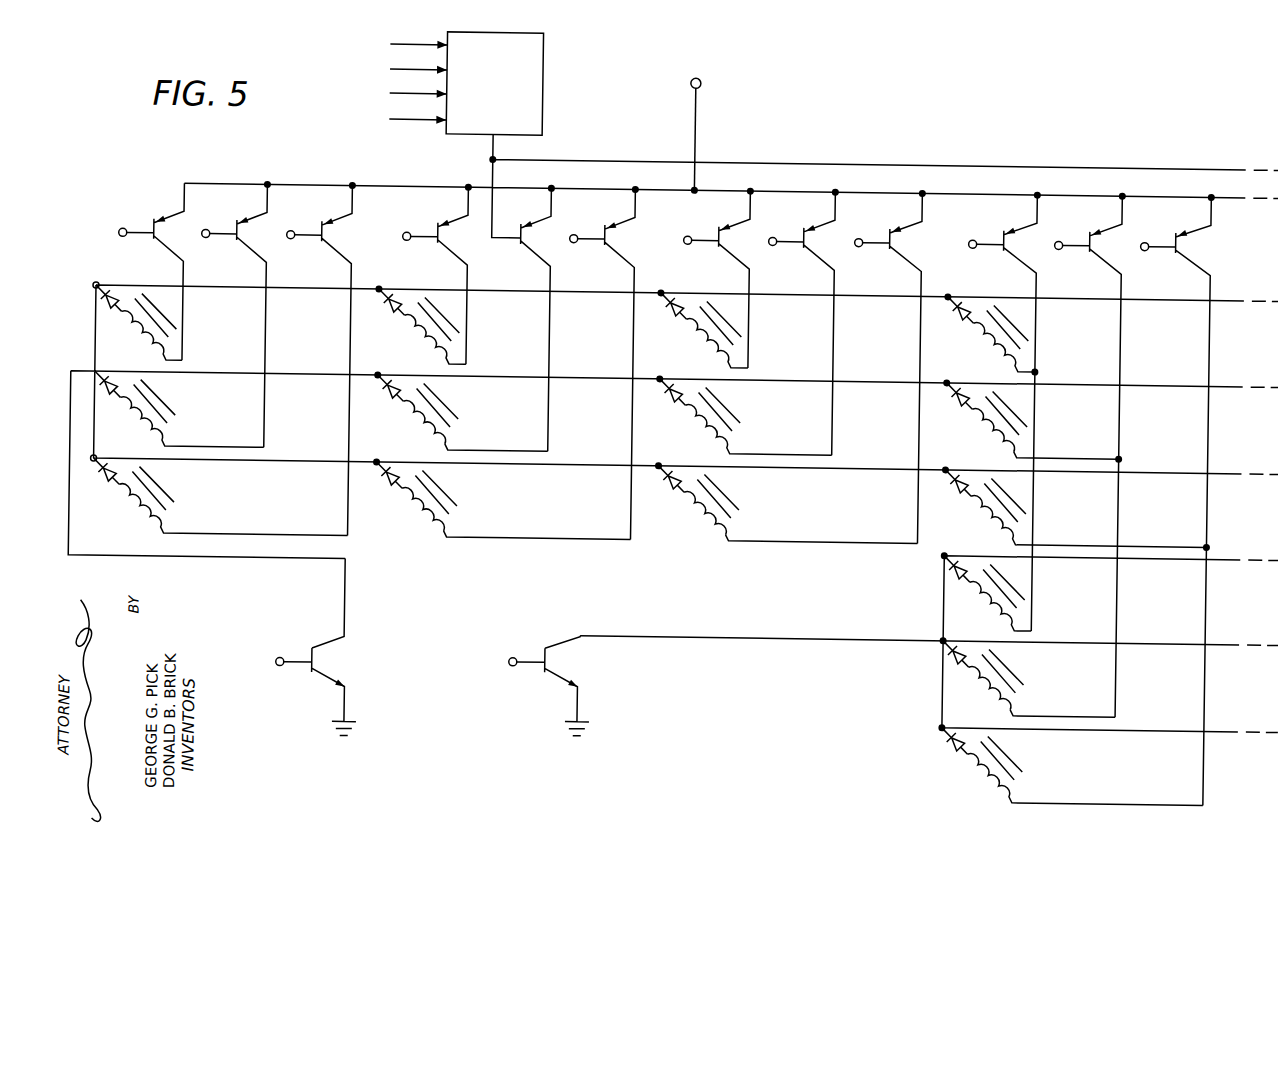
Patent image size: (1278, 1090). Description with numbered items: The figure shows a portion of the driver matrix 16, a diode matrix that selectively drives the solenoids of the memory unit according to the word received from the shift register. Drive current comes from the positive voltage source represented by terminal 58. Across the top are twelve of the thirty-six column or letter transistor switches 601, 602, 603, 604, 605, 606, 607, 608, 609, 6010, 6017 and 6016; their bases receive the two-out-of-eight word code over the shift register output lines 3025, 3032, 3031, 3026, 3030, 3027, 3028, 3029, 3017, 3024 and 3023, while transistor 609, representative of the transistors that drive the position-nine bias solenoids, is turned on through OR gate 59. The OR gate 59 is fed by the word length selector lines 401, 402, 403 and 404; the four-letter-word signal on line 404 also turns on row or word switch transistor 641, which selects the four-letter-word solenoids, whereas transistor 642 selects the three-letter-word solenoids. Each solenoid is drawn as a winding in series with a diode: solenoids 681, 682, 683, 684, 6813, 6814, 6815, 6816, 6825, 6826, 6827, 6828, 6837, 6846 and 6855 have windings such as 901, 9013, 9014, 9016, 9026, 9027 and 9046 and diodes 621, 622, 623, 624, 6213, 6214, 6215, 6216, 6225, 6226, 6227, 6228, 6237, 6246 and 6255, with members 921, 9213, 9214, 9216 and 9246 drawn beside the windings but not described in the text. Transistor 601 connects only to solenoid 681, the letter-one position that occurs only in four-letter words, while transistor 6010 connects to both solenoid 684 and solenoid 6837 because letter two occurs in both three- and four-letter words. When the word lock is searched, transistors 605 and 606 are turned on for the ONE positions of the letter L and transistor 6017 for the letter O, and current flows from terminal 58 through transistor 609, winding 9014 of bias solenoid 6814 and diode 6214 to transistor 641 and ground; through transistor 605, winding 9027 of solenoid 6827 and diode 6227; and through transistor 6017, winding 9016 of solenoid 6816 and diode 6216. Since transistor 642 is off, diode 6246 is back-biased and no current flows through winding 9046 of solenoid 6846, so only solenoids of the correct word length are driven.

The driver matrix 16 is at (133, 537).
The positive voltage source terminal 58 is at (697, 78).
The OR gate 59 is at (540, 47).
The word length selector line 401 is at (386, 41).
The word length selector line 402 is at (386, 66).
The word length selector line 403 is at (386, 89).
The word length selector line 404 is at (386, 114).
The transistor 601 is at (150, 220).
The transistor 602 is at (434, 220).
The transistor 603 is at (715, 220).
The transistor 604 is at (800, 220).
The transistor 605 is at (886, 220).
The transistor 606 is at (601, 220).
The transistor 607 is at (318, 220).
The transistor 608 is at (233, 220).
The transistor 609 is at (517, 233).
The transistor 6010 is at (1000, 220).
The transistor 6016 is at (1172, 220).
The transistor 6017 is at (1086, 220).
The shift register output line 3017 is at (972, 236).
The shift register output line 3023 is at (1144, 236).
The shift register output line 3024 is at (1058, 236).
The shift register output line 3025 is at (122, 236).
The shift register output line 3026 is at (406, 236).
The shift register output line 3027 is at (687, 236).
The shift register output line 3028 is at (772, 236).
The shift register output line 3029 is at (858, 236).
The shift register output line 3030 is at (573, 236).
The shift register output line 3031 is at (290, 236).
The shift register output line 3032 is at (205, 236).
The diode 621 is at (131, 312).
The diode 622 is at (394, 313).
The diode 623 is at (680, 312).
The diode 624 is at (968, 310).
The diode 6213 is at (136, 402).
The diode 6214 is at (395, 392).
The diode 6215 is at (679, 389).
The diode 6216 is at (969, 390).
The diode 6225 is at (114, 472).
The diode 6226 is at (392, 471).
The diode 6227 is at (675, 468).
The diode 6228 is at (967, 468).
The diode 6237 is at (965, 586).
The diode 6246 is at (964, 668).
The diode 6255 is at (950, 738).
The solenoid 681 is at (158, 346).
The solenoid 682 is at (432, 339).
The solenoid 683 is at (716, 340).
The solenoid 684 is at (1007, 340).
The solenoid 6813 is at (159, 435).
The bias solenoid 6814 is at (439, 432).
The solenoid 6815 is at (712, 428).
The solenoid 6816 is at (1003, 438).
The solenoid 6825 is at (144, 507).
The solenoid 6826 is at (439, 525).
The solenoid 6827 is at (709, 522).
The solenoid 6828 is at (987, 503).
The solenoid 6837 is at (1003, 608).
The solenoid 6846 is at (1008, 698).
The solenoid 6855 is at (991, 776).
The winding 901 is at (150, 338).
The winding 9013 is at (148, 425).
The winding 9014 is at (420, 421).
The winding 9016 is at (998, 420).
The winding 9026 is at (417, 505).
The winding 9027 is at (692, 504).
The winding 9046 is at (1003, 683).
The magnetic core 921 is at (142, 300).
The magnetic core 9213 is at (159, 404).
The magnetic core 9214 is at (444, 406).
The magnetic core 9216 is at (993, 386).
The magnetic core 9246 is at (1001, 646).
The transistor switch 641 is at (314, 672).
The transistor switch 642 is at (547, 670).